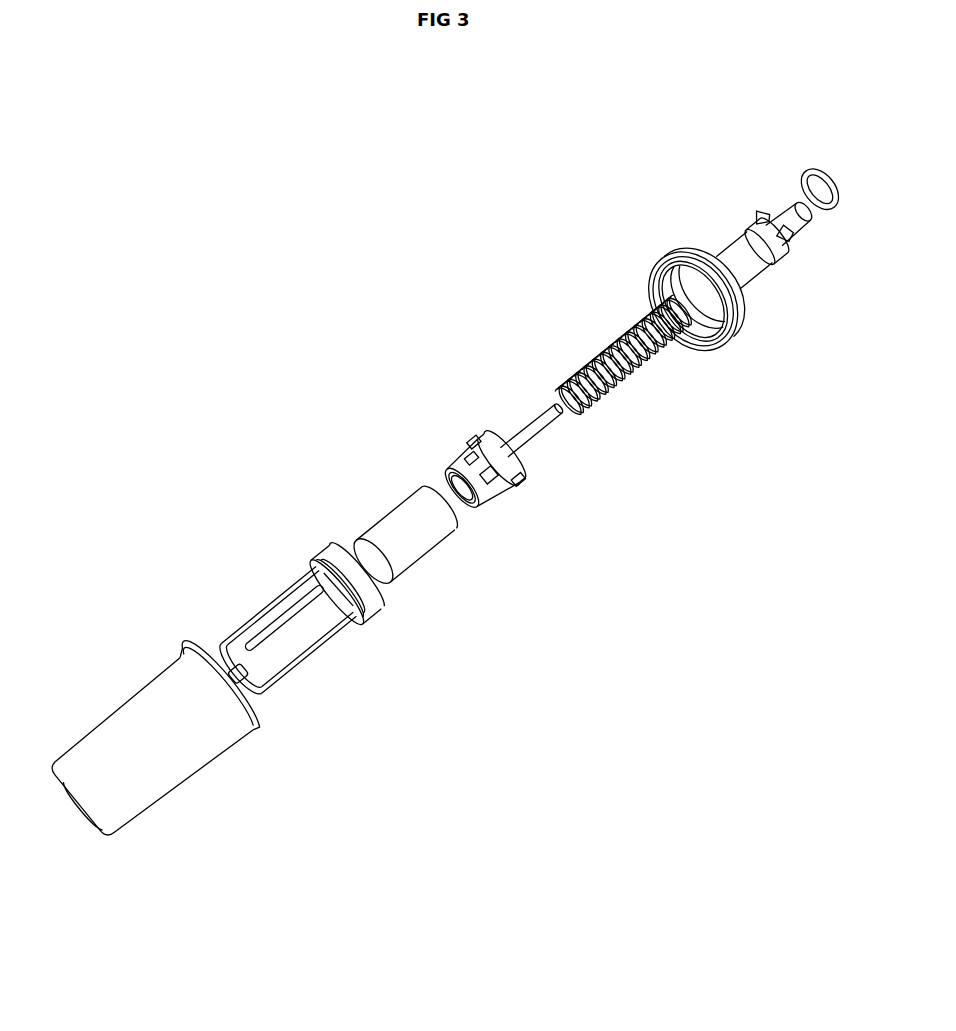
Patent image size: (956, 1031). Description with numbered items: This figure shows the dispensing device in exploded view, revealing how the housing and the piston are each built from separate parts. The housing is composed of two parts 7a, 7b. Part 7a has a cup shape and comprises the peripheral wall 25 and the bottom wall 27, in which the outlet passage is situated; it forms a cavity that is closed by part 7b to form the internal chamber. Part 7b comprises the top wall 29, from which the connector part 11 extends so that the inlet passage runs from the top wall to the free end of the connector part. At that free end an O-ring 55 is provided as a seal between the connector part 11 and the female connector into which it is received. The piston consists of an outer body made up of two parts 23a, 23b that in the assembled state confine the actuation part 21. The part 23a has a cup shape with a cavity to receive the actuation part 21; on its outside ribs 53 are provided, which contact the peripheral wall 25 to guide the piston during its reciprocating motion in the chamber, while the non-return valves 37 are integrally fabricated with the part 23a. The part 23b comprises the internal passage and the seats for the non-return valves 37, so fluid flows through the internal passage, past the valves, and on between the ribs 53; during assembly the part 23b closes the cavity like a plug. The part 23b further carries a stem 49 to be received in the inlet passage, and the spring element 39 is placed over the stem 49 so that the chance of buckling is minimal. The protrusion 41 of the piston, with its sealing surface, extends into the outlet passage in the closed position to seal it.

The housing part 7a is at (134, 740).
The peripheral wall 25 is at (130, 713).
The bottom wall 27 is at (83, 820).
The protrusion 41 is at (238, 668).
The outer body part 23a is at (272, 630).
The ribs 53 is at (283, 622).
The non-return valves 37 is at (347, 603).
The actuation part 21 is at (383, 532).
The outer body part 23b is at (480, 493).
The stem 49 is at (537, 427).
The spring element 39 is at (622, 365).
The top wall 29 is at (668, 254).
The housing part 7b is at (713, 243).
The connector part 11 is at (737, 250).
The O-ring 55 is at (805, 181).